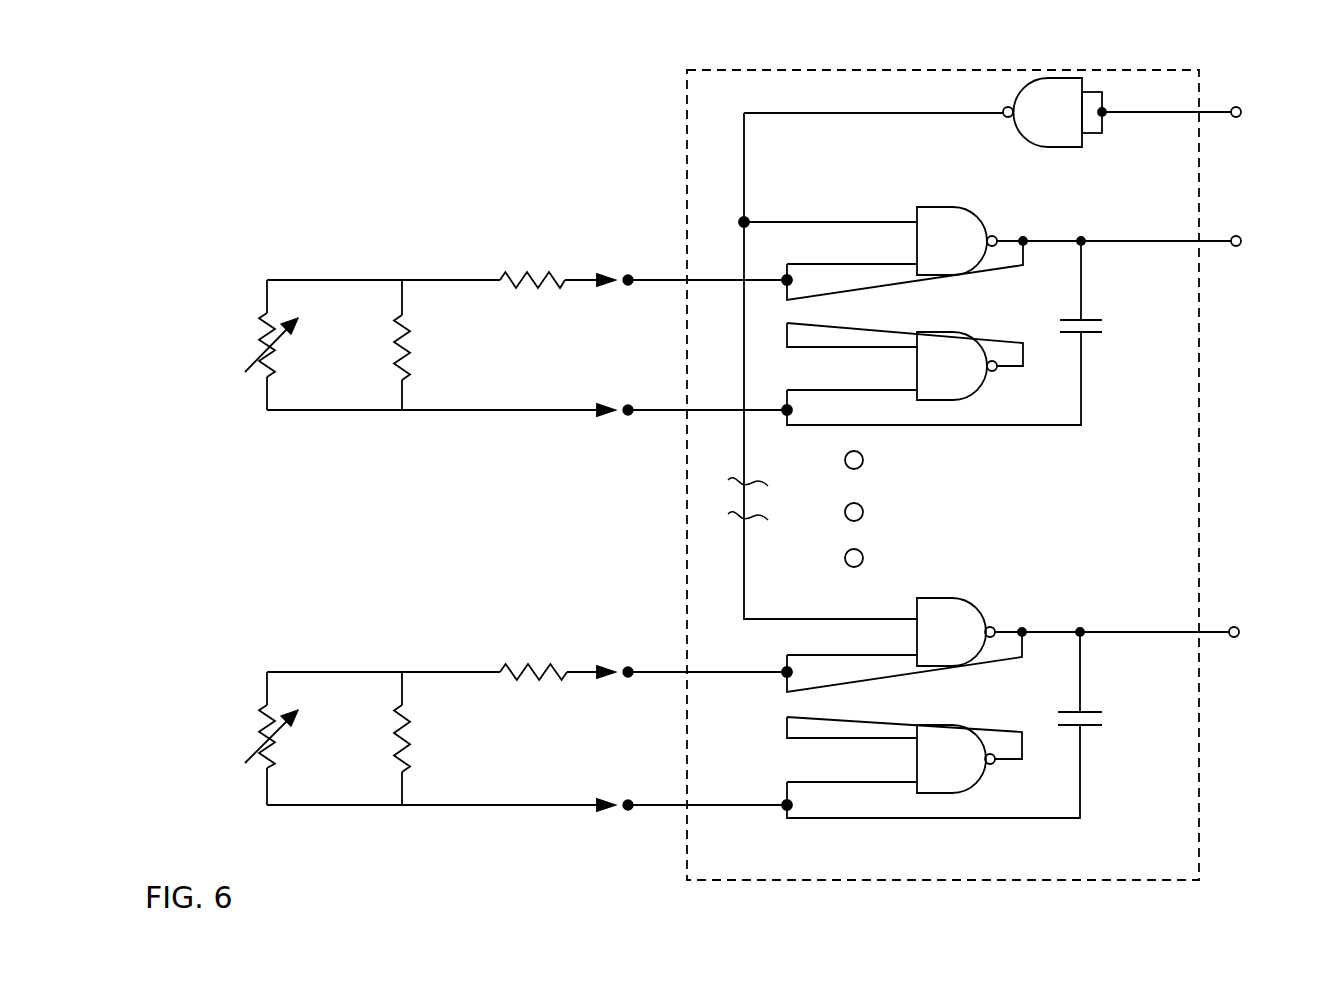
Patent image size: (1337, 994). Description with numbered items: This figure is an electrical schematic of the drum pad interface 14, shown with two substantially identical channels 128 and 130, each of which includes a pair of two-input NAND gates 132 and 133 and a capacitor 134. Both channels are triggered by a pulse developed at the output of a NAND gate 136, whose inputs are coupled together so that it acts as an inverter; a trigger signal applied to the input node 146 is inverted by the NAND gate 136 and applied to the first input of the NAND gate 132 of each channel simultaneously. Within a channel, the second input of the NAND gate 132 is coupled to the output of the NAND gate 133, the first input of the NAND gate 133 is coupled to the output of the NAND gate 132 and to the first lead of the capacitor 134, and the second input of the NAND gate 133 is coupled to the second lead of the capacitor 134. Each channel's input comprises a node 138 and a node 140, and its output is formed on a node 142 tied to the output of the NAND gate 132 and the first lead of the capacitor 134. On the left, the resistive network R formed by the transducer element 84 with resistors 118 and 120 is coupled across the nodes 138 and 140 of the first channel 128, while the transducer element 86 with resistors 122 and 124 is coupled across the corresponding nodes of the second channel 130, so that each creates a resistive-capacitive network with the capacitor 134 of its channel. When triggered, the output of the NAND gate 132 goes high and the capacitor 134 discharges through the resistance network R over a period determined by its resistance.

The drum pad interface 14 is at (962, 892).
The resistance network R is at (190, 230).
The transducer element 84 is at (250, 346).
The transducer element 86 is at (253, 732).
The resistor 118 is at (412, 340).
The resistor 122 is at (418, 730).
The resistor 120 is at (528, 262).
The resistor 124 is at (530, 654).
The node 138 is at (632, 273).
The node 140 is at (630, 418).
The channel 128 is at (1023, 436).
The channel 130 is at (1008, 583).
The NAND gate 132 is at (946, 228).
The NAND gate 133 is at (937, 377).
The capacitor 134 is at (1110, 325).
The NAND gate 136 is at (1058, 98).
The node 142 is at (1243, 238).
The input node 146 is at (1246, 110).